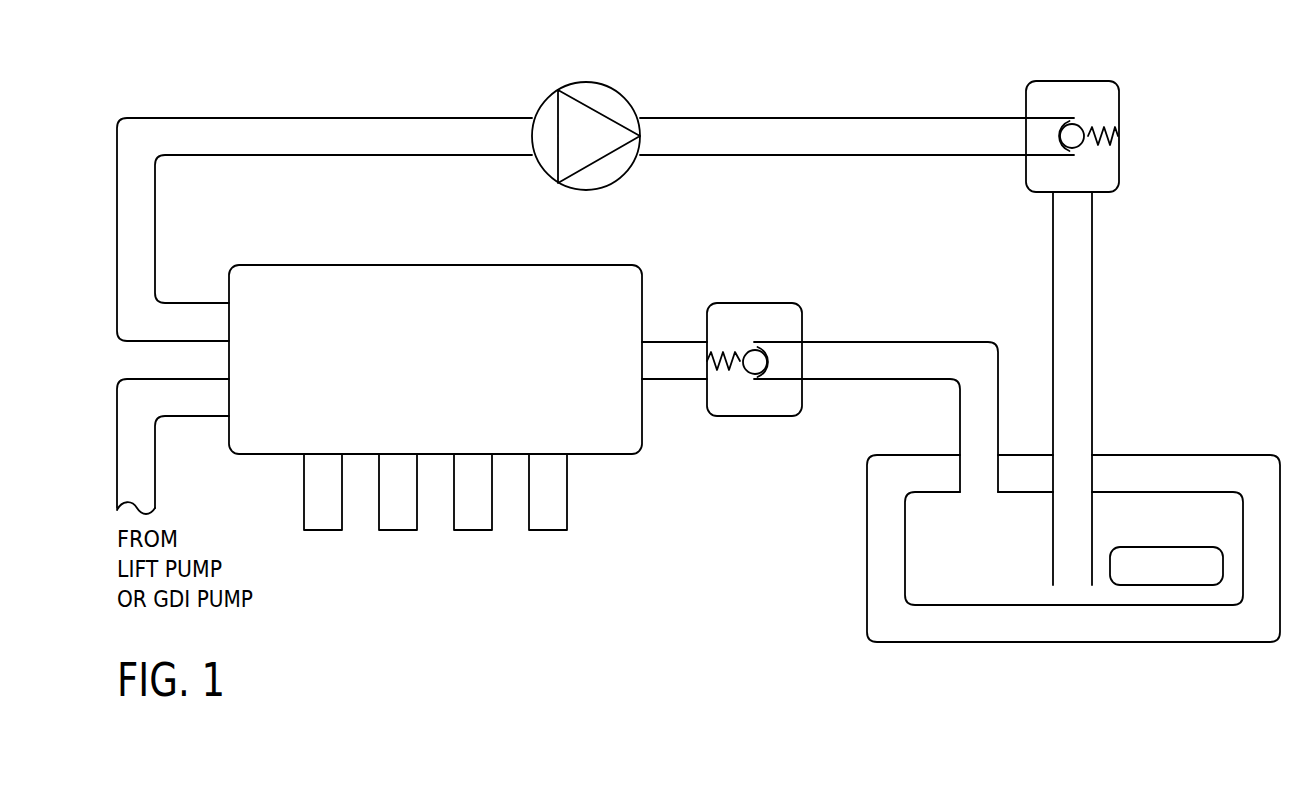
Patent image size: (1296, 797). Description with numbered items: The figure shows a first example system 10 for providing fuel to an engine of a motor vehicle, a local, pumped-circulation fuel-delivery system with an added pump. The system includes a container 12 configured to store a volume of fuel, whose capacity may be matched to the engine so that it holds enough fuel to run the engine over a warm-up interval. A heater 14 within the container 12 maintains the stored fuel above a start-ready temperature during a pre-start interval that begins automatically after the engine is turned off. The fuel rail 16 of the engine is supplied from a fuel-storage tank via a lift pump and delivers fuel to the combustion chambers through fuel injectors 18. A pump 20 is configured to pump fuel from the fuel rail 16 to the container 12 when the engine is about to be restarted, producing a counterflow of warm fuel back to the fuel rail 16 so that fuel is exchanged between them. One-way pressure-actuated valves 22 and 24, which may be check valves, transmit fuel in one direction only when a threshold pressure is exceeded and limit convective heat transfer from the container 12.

The system 10 is at (698, 351).
The container 12 is at (1185, 455).
The heater 14 is at (1154, 579).
The fuel rail 16 is at (425, 371).
The fuel injectors 18 is at (632, 486).
The pump 20 is at (586, 82).
The one-way pressure-actuated valve 22 is at (754, 303).
The one-way pressure-actuated valve 24 is at (1073, 81).